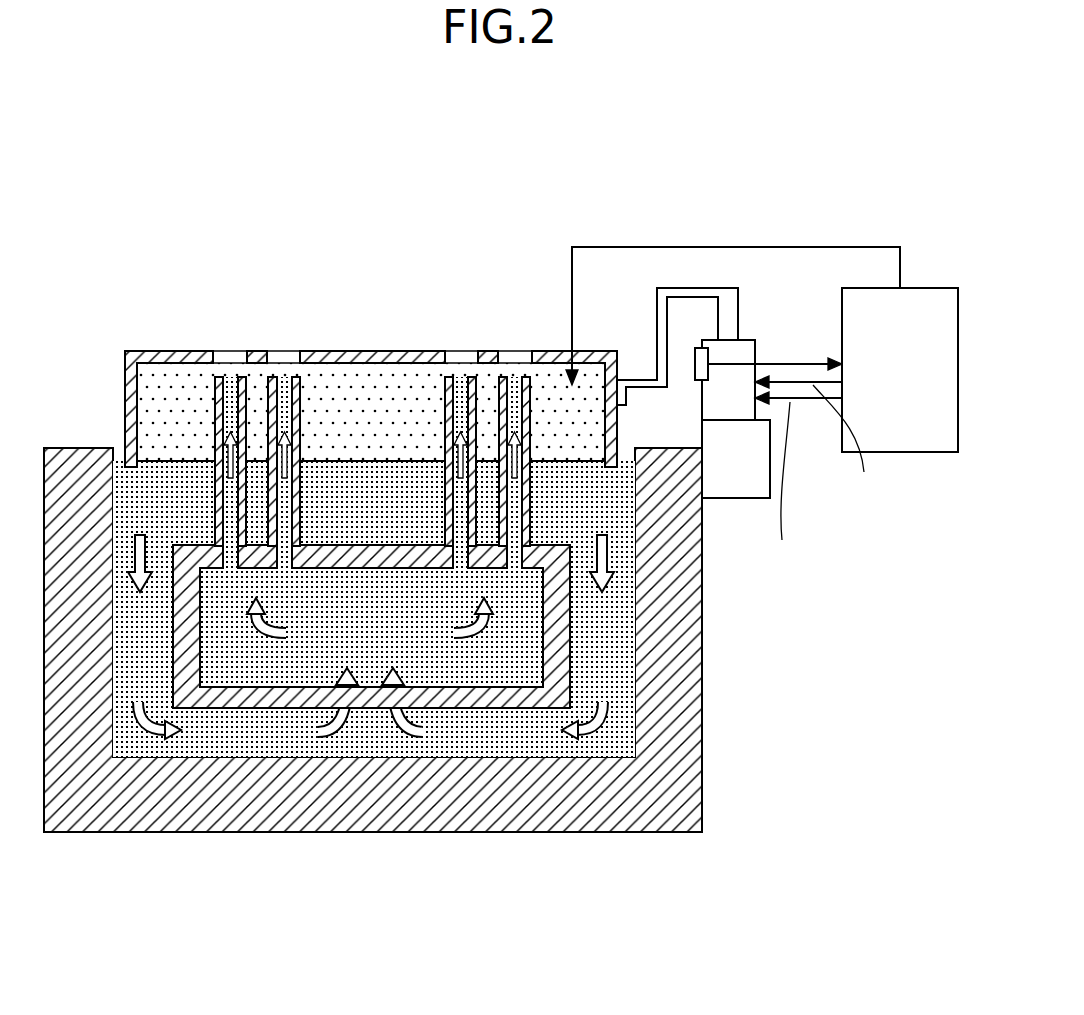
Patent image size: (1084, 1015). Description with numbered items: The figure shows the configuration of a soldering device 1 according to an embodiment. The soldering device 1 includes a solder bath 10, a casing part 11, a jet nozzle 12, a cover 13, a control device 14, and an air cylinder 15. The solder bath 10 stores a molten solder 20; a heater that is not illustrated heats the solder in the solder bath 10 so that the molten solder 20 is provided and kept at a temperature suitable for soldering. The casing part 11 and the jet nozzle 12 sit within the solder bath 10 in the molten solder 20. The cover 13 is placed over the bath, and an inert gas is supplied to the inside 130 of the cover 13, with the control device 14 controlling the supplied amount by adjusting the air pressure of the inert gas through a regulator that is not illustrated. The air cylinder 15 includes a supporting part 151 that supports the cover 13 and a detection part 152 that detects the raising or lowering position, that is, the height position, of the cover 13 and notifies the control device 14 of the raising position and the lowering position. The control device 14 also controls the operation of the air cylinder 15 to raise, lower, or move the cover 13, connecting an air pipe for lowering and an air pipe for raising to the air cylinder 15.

The soldering device 1 is at (816, 148).
The solder bath 10 is at (220, 790).
The casing part 11 is at (277, 697).
The jet nozzle 12 is at (215, 407).
The cover 13 is at (400, 351).
The inside of the cover 130 is at (332, 395).
The control device 14 is at (933, 288).
The air cylinder 15 is at (770, 318).
The supporting part 151 is at (706, 288).
The detection part 152 is at (702, 365).
The molten solder 20 is at (620, 643).